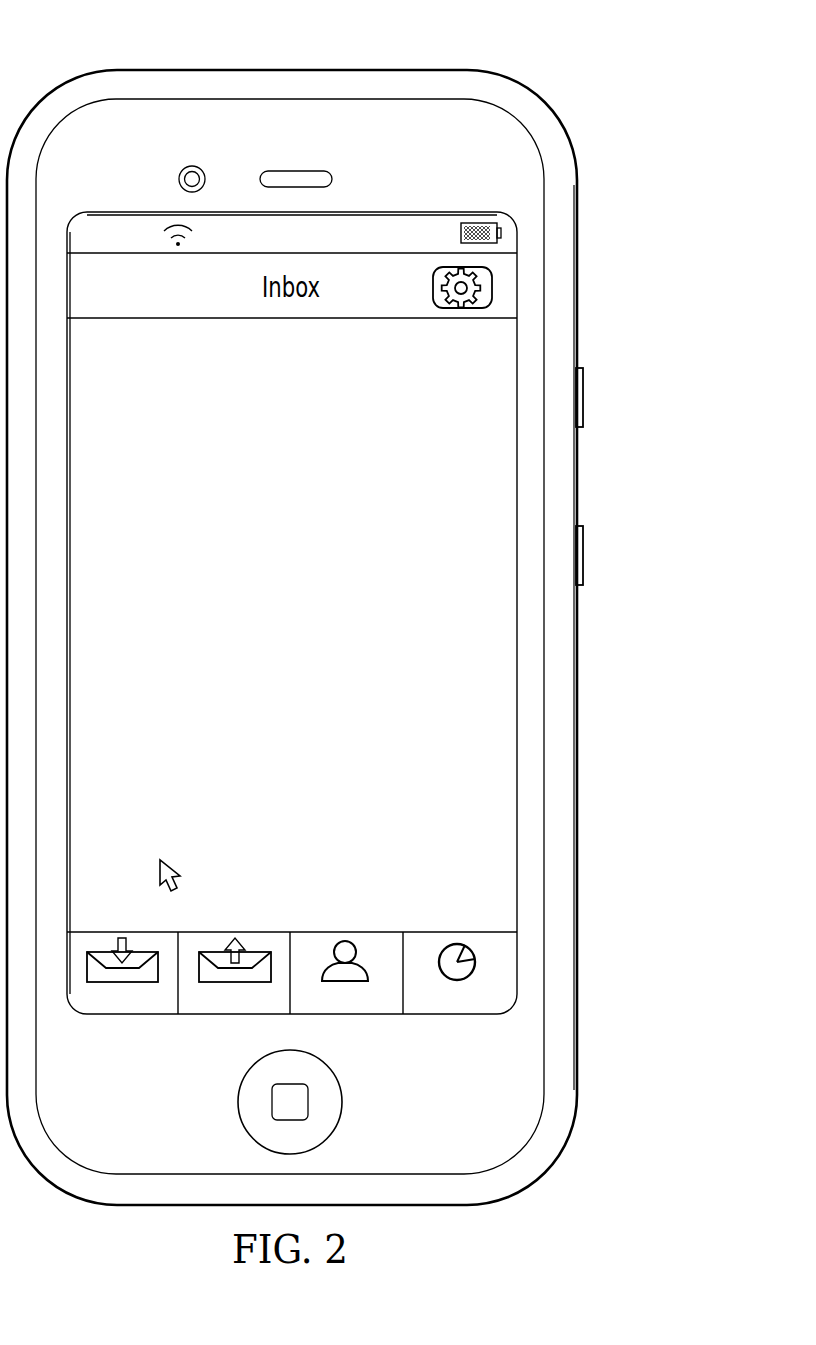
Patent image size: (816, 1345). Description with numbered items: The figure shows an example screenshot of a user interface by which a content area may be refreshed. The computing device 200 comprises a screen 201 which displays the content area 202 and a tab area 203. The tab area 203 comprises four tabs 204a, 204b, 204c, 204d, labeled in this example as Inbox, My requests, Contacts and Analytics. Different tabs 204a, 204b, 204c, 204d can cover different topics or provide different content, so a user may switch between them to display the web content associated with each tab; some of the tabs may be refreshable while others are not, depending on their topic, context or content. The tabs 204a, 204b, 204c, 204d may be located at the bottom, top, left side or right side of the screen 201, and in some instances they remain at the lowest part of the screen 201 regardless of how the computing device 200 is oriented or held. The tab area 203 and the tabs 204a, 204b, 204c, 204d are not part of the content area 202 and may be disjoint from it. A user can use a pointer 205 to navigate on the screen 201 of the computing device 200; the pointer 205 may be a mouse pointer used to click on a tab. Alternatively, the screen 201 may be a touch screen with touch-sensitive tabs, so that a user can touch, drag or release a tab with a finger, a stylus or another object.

The computing device 200 is at (388, 62).
The screen 201 is at (425, 202).
The content area 202 is at (314, 641).
The tab area 203 is at (387, 922).
The tab 204a is at (123, 1008).
The tab 204b is at (207, 1008).
The tab 204c is at (373, 1008).
The tab 204d is at (457, 1008).
The pointer 205 is at (172, 864).